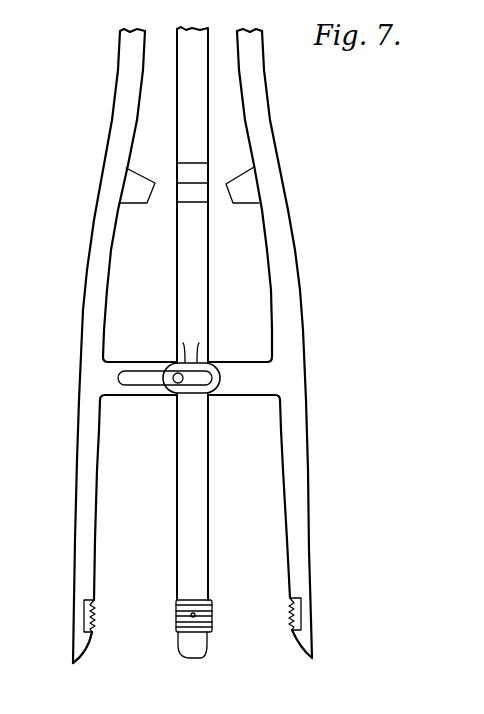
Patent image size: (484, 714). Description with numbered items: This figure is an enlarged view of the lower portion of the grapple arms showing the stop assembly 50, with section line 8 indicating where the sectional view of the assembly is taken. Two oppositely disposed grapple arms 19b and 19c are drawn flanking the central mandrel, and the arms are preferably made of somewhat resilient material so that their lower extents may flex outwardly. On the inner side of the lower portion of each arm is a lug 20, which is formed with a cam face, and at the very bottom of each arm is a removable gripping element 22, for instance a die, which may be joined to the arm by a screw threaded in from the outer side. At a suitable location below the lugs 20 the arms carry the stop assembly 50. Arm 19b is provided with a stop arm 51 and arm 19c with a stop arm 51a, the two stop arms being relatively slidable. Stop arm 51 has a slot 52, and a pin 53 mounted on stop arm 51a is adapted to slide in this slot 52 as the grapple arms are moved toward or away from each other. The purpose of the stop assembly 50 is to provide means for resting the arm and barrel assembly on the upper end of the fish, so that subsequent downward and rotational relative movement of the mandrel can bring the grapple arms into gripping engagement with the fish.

The grapple arm 19b is at (92, 303).
The grapple arm 19c is at (291, 322).
The lug 20 is at (183, 197).
The gripping element 22 is at (177, 616).
The stop assembly 50 is at (223, 356).
The stop arm 51 is at (137, 393).
The stop arm 51a is at (241, 378).
The slot 52 is at (133, 377).
The pin 53 is at (177, 383).
The section line 8- 8 is at (78, 380).